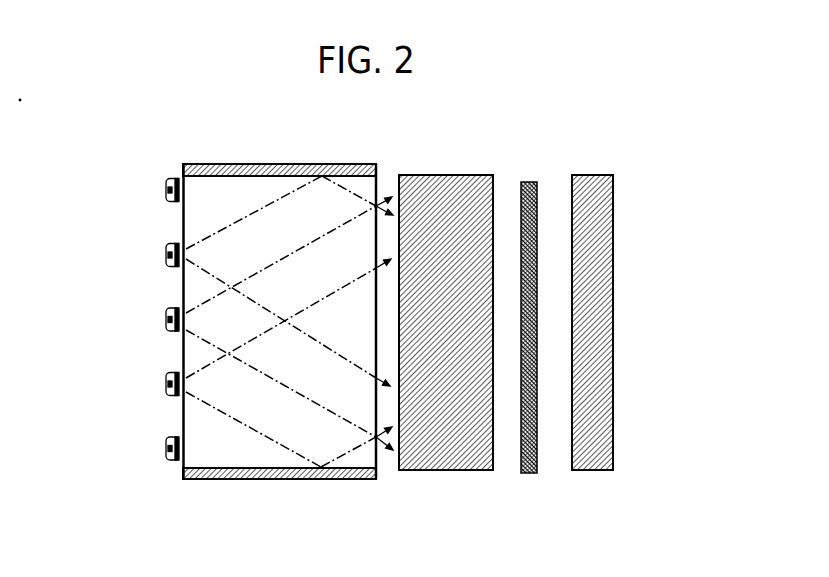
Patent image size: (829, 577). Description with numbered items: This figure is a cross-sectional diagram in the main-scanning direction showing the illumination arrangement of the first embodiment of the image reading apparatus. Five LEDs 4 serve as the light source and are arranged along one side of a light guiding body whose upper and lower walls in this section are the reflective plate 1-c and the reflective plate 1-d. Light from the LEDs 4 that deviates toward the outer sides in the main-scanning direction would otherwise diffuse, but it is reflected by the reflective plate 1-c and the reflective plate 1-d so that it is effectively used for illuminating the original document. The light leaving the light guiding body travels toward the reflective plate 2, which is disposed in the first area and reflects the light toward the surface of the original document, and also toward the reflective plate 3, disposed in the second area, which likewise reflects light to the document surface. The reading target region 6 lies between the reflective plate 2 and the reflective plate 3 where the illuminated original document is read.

The reflective plate 1-c is at (283, 164).
The reflective plate 1-d is at (296, 498).
The reflective plate 2 is at (475, 470).
The reflective plate 3 is at (600, 470).
The LED 4 is at (166, 183).
The reading target region 6 is at (552, 157).